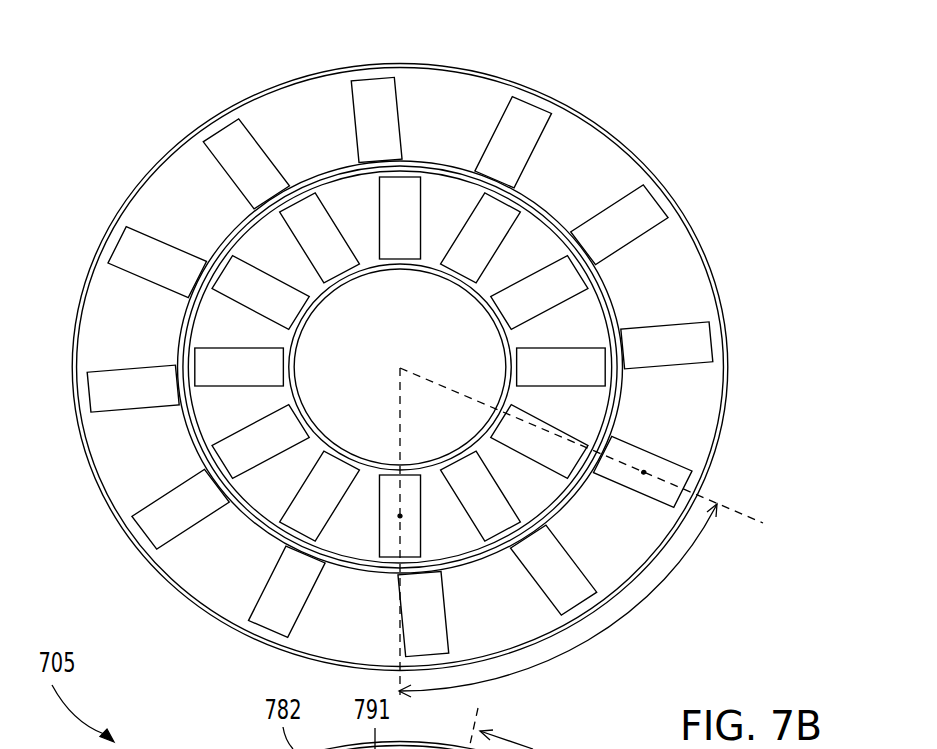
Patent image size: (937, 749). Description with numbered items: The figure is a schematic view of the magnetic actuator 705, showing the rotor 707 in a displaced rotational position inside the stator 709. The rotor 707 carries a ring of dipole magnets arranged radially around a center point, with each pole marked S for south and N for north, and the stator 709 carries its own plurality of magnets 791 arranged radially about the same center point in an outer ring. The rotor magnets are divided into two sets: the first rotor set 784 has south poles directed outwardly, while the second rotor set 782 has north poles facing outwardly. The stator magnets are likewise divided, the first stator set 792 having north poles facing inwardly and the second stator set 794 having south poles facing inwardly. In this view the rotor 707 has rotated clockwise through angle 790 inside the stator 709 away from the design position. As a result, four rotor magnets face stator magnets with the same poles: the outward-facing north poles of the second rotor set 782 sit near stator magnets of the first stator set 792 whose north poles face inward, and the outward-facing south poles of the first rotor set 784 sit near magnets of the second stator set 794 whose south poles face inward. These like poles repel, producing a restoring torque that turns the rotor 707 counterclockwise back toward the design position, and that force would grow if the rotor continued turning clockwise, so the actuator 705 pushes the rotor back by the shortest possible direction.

The actuator 705 is at (95, 91).
The rotor 707 is at (527, 233).
The stator 709 is at (677, 255).
The second rotor set 782 is at (383, 213).
The first rotor set 784 is at (387, 523).
The angle 790 is at (700, 527).
The magnets 791 is at (652, 465).
The first stator set 792 is at (356, 80).
The second stator set 794 is at (400, 612).